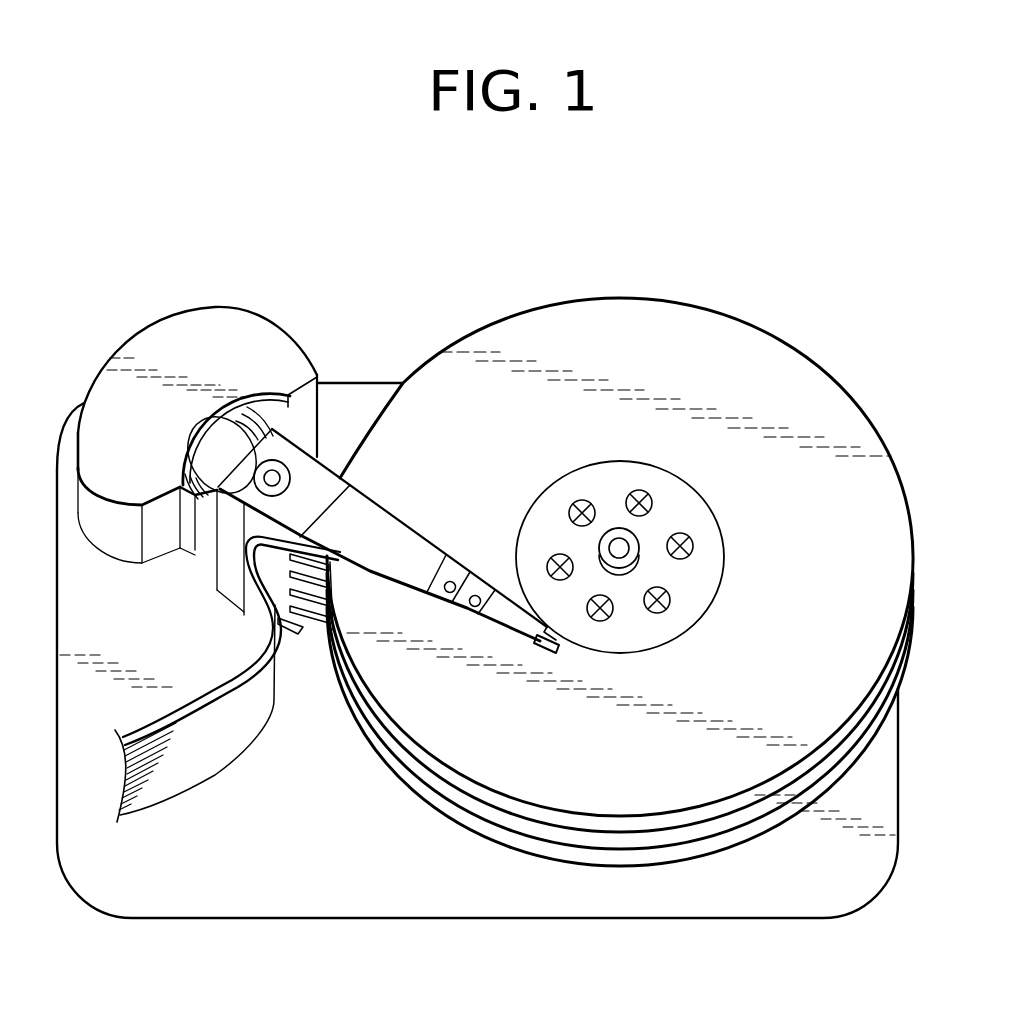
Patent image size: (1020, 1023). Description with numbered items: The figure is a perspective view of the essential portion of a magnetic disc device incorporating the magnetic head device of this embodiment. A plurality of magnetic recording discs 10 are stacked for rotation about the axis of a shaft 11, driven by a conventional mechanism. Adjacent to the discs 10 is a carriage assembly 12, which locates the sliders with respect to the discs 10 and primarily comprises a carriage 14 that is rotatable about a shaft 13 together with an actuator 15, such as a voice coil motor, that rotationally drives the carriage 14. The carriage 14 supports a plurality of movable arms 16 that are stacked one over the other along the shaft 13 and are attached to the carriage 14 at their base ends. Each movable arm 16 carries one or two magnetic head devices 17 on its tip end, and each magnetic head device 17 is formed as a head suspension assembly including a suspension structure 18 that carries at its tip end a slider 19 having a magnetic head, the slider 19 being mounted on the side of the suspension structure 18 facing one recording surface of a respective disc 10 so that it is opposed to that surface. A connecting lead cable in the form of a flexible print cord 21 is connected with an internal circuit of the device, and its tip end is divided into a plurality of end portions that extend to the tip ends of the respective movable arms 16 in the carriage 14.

The magnetic recording disc 10 is at (863, 392).
The shaft 11 is at (622, 548).
The carriage assembly 12 is at (318, 319).
The shaft 13 is at (275, 478).
The carriage 14 is at (232, 549).
The actuator 15 is at (148, 477).
The movable arm 16 is at (353, 512).
The magnetic head device 17 is at (499, 586).
The suspension structure 18 is at (503, 622).
The slider 19 is at (557, 650).
The flexible print cord 21 is at (250, 713).